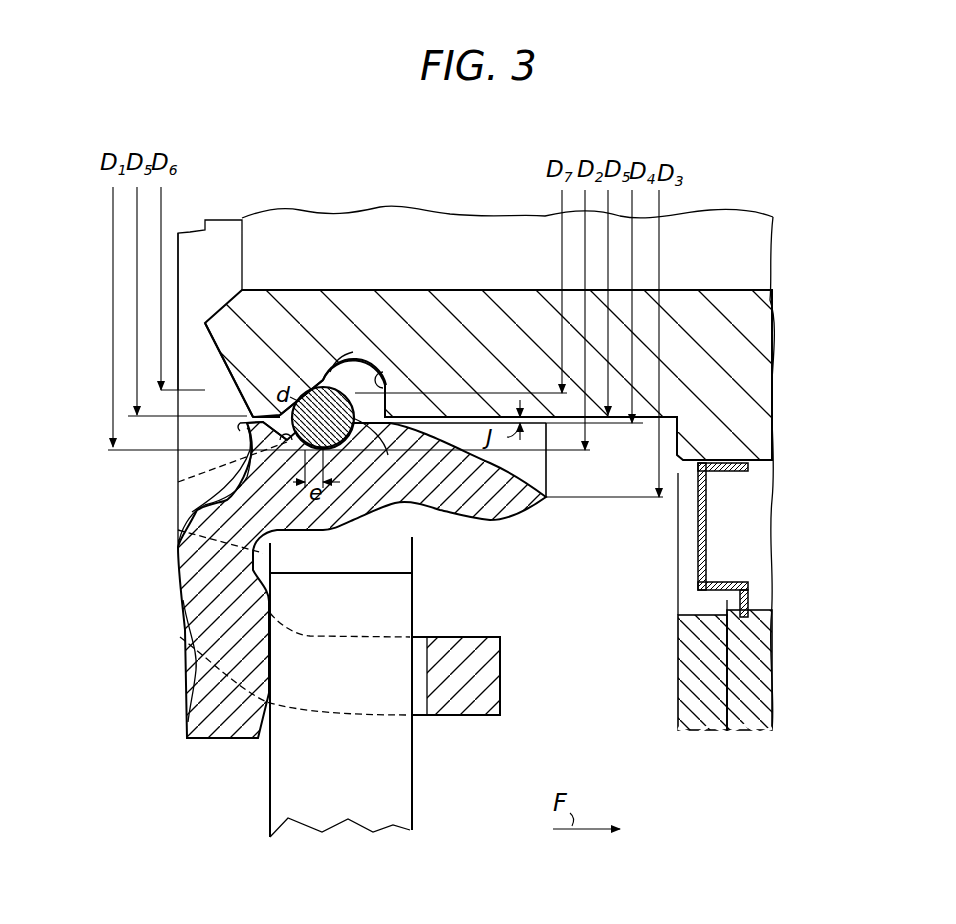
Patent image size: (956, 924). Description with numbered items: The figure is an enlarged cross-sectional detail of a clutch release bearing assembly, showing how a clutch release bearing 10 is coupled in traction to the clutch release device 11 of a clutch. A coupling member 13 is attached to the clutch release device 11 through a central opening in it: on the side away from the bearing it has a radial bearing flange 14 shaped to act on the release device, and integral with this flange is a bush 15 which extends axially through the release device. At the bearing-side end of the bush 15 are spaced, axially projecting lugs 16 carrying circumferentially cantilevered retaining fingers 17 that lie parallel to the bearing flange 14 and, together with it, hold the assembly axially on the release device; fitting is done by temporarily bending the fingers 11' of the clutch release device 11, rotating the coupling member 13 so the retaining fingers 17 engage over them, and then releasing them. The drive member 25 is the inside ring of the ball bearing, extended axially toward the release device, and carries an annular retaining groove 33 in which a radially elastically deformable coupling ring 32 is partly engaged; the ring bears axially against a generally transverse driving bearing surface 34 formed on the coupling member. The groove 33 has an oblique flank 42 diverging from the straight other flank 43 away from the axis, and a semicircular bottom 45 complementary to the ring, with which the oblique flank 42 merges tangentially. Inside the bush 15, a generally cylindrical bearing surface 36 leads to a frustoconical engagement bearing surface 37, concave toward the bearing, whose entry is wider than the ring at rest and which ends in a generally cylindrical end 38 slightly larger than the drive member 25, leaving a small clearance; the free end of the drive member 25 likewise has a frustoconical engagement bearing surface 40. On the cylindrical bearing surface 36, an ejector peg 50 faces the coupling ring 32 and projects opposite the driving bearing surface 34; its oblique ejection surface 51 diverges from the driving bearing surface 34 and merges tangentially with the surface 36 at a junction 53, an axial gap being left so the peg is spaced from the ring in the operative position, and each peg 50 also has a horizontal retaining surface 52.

The clutch release bearing 10 is at (740, 733).
The clutch release device 11 is at (311, 687).
The fingers of the clutch release device 11' is at (437, 837).
The coupling member 13 is at (176, 575).
The bearing flange 14 is at (205, 745).
The bush 15 is at (472, 495).
The lugs 16 is at (383, 635).
The retaining fingers 17 is at (485, 700).
The drive member 25 is at (762, 462).
The coupling ring 32 is at (400, 404).
The retaining groove 33 is at (352, 350).
The driving bearing surface 34 is at (345, 451).
The cylindrical bearing surface 36 is at (216, 470).
The frustoconical engagement bearing surface 37 is at (540, 478).
The generally cylindrical end 38 is at (382, 442).
The frustoconical engagement bearing surface 40 is at (214, 398).
The oblique flank 42 is at (313, 390).
The other flank 43 is at (388, 378).
The bottom of the retaining groove 45 is at (348, 364).
The ejector peg 50 is at (242, 433).
The ejection surface 51 is at (289, 445).
The horizontal retaining surface 52 is at (254, 414).
The junction 53 is at (237, 519).